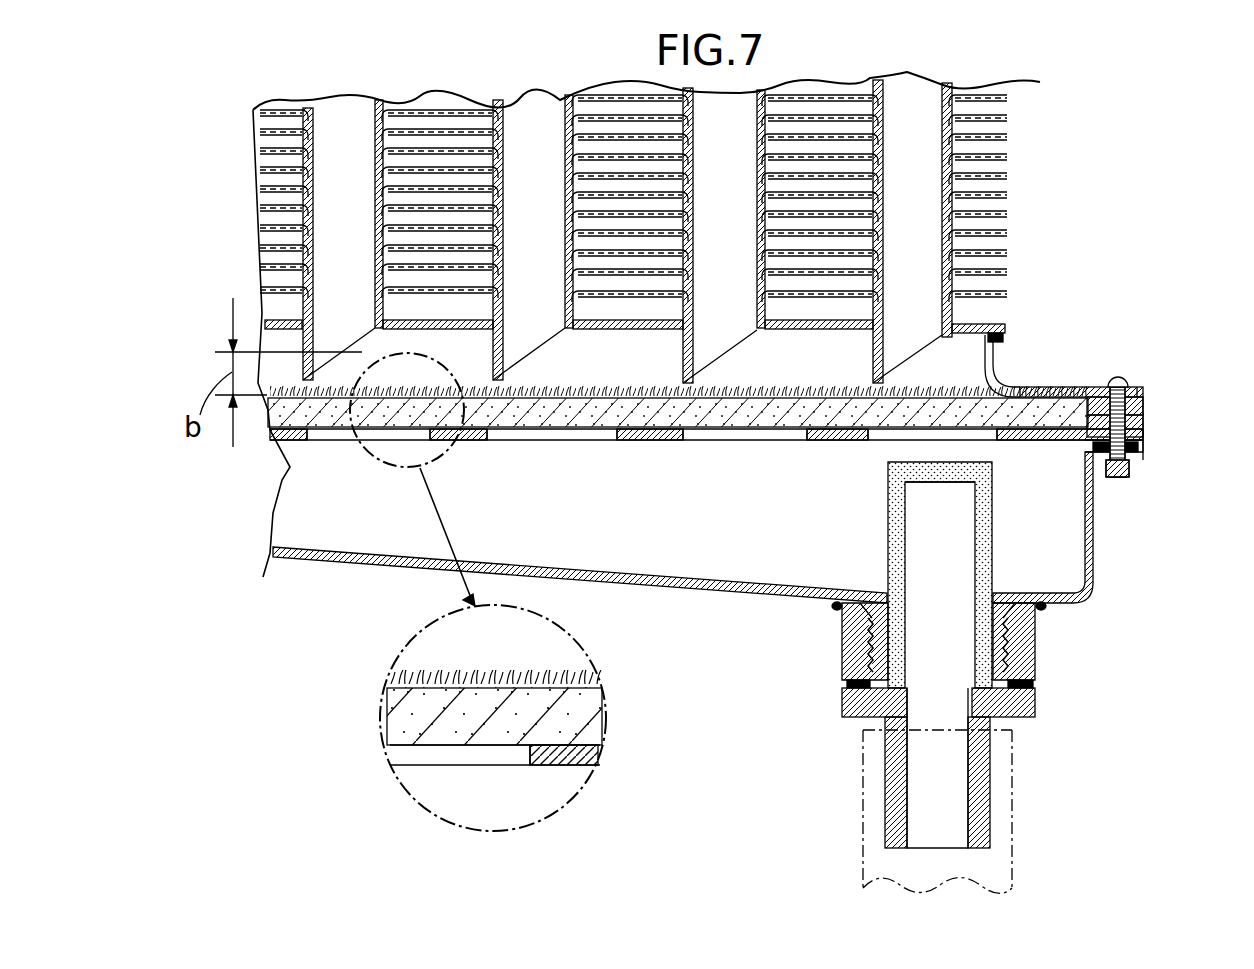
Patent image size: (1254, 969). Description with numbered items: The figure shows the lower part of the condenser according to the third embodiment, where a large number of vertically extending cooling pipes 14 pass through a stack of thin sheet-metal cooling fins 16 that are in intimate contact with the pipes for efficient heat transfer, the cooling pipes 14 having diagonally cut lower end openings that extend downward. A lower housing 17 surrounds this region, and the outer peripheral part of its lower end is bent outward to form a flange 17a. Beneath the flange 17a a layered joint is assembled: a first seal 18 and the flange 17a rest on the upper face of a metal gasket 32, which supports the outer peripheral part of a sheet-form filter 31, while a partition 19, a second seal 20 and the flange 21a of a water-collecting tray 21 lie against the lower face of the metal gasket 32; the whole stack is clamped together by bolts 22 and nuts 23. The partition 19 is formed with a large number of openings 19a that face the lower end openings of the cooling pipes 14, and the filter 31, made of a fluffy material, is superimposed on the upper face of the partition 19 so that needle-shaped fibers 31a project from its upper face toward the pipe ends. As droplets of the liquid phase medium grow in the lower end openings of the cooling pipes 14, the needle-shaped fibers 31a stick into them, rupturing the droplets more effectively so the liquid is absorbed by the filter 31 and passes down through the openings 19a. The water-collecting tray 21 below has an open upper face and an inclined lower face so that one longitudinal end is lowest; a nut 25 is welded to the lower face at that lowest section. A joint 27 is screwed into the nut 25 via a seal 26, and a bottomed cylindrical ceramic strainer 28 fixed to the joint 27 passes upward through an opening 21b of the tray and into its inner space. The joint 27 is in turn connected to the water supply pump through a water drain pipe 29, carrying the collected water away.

The cooling pipe 14 is at (312, 290).
The cooling fin 16 is at (1008, 295).
The lower housing 17 is at (1043, 383).
The flange 17a is at (1143, 393).
The first seal 18 is at (1143, 401).
The partition 19 is at (661, 440).
The opening 19a is at (340, 433).
The second seal 20 is at (1143, 460).
The water-collecting tray 21 is at (582, 587).
The flange 21a is at (1133, 457).
The opening 21b is at (923, 577).
The bolt 22 is at (1120, 378).
The nut 23 is at (1113, 478).
The nut 25 is at (840, 637).
The seal 26 is at (840, 683).
The joint 27 is at (885, 740).
The ceramic strainer 28 is at (995, 480).
The water drain pipe 29 is at (863, 793).
The filter 31 is at (740, 400).
The needle-shaped fiber 31a is at (590, 390).
The metal gasket 32 is at (1143, 423).